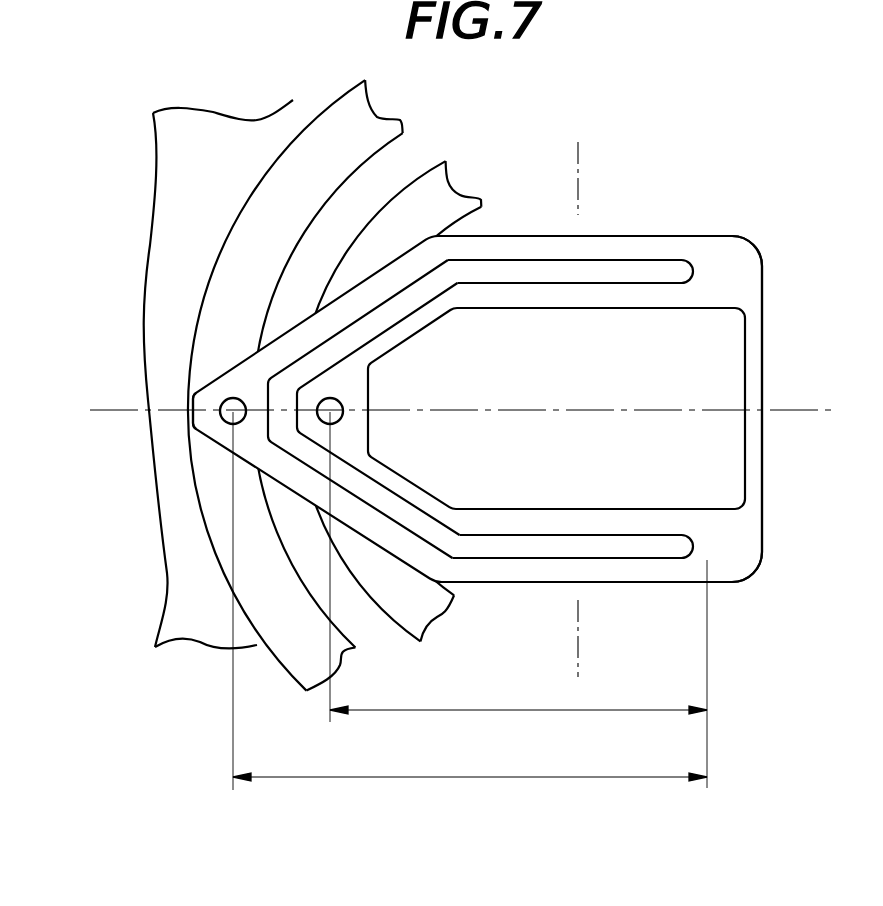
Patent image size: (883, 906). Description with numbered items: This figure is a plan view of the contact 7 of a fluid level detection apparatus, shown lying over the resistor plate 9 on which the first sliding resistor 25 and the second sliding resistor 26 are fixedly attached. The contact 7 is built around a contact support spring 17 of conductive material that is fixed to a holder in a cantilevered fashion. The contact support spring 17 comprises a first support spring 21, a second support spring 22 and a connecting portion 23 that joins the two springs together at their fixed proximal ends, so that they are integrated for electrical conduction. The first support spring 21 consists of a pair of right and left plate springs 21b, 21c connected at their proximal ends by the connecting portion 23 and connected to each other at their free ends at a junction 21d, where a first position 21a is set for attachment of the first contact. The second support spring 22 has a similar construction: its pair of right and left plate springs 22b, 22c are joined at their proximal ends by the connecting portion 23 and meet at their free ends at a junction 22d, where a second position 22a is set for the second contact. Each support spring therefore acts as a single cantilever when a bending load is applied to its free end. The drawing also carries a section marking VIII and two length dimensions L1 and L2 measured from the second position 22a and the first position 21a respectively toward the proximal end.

The contact 7 is at (455, 383).
The resistor plate 9 is at (183, 147).
The contact support spring 17 is at (650, 236).
The first support spring 21 is at (455, 384).
The first position 21a is at (233, 425).
The plate spring 21b is at (618, 252).
The plate spring 21c is at (637, 570).
The junction 21d is at (240, 383).
The second support spring 22 is at (521, 325).
The second position 22a is at (342, 402).
The plate spring 22b is at (525, 298).
The plate spring 22c is at (618, 522).
The junction 22d is at (318, 433).
The connecting portion 23 is at (732, 273).
The first sliding resistor 25 is at (216, 262).
The second sliding resistor 26 is at (412, 182).
The section line VIII is at (578, 146).
The dimension L1 is at (518, 600).
The dimension L2 is at (470, 601).